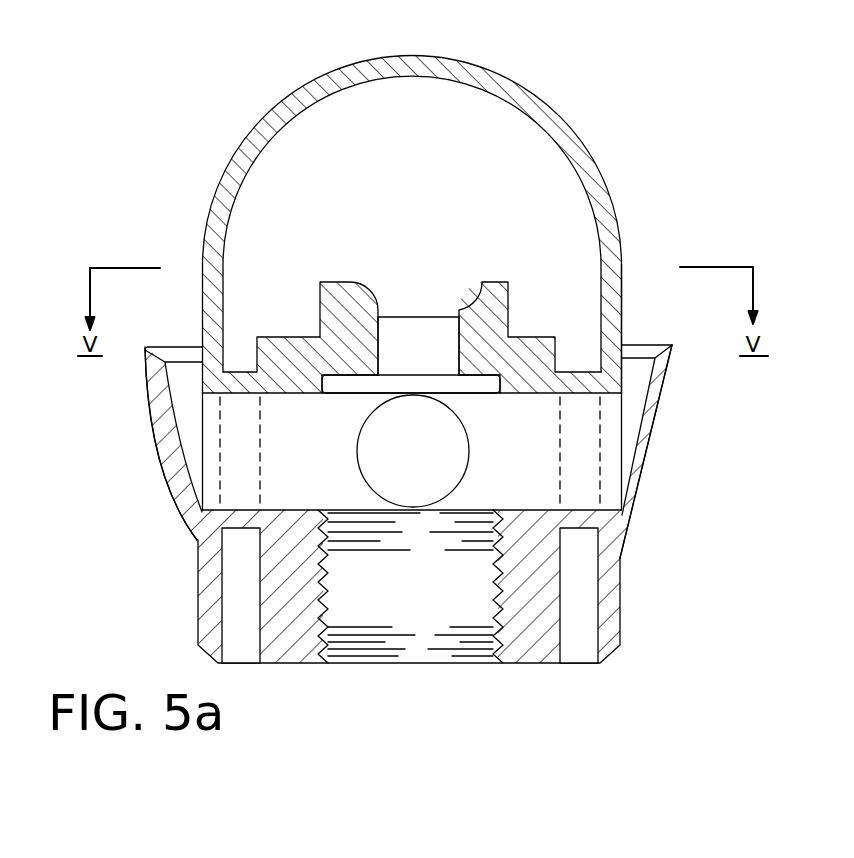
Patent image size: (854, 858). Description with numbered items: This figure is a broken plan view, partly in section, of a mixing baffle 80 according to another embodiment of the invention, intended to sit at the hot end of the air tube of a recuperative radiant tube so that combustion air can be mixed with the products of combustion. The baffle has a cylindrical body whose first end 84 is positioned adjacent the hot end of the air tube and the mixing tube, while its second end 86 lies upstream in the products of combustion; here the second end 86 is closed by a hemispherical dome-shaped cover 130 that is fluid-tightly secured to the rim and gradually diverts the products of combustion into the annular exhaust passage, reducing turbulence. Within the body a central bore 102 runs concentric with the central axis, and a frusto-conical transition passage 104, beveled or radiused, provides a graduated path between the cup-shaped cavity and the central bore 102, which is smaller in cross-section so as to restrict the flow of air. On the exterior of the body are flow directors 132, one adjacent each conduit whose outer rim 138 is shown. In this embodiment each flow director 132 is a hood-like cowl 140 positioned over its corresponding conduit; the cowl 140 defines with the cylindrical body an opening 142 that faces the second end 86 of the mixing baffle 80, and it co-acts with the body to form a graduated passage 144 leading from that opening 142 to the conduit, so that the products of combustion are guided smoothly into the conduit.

The mixing baffle 80 is at (427, 429).
The dome-shaped cover 130 is at (427, 429).
The second end 86 is at (622, 290).
The frusto-conical transition passage 104 is at (375, 283).
The central bore 102 is at (437, 332).
The outer rim 138 is at (365, 437).
The first end 84 is at (620, 607).
The cowl 140 is at (148, 423).
The graduated passage 144 is at (640, 408).
The opening 142 is at (190, 330).
The flow director 132 is at (156, 486).